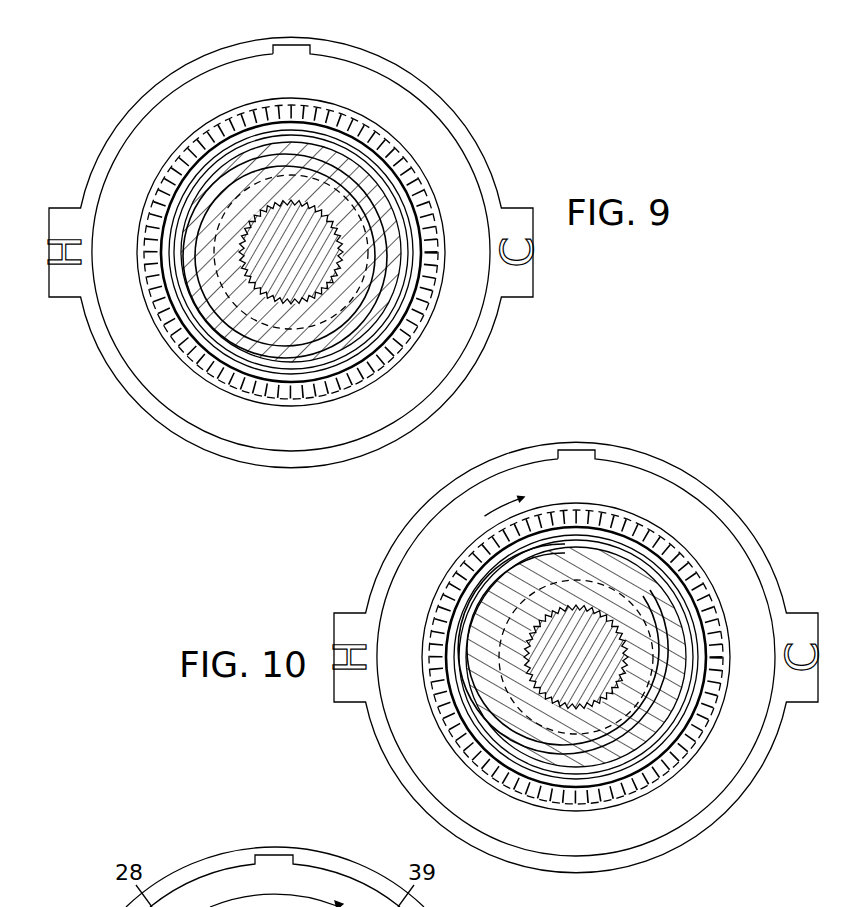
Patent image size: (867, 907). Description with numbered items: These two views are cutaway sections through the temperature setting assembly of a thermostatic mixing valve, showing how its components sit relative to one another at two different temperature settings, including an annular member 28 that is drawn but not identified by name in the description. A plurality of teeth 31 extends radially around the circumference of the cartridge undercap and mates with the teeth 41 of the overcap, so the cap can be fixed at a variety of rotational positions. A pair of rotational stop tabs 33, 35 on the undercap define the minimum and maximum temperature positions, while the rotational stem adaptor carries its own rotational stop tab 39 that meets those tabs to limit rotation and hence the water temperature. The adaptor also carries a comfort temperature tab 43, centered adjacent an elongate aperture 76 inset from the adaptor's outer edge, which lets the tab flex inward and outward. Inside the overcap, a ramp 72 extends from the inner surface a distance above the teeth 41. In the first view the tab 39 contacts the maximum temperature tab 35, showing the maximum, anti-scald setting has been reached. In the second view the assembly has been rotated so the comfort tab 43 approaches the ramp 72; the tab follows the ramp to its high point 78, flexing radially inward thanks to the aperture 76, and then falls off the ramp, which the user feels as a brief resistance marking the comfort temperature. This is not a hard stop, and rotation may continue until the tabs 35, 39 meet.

In FIG. 9, the cam ring 28 is at (285, 180).
In FIG. 10, the cam ring 28 is at (590, 595).
In FIG. 9, the teeth 31 is at (291, 305).
In FIG. 10, the teeth 31 is at (604, 647).
In FIG. 9, the rotational stop tab 33 is at (356, 252).
In FIG. 10, the rotational stop tab 33 is at (640, 657).
In FIG. 9, the maximum temperature tab 35 is at (280, 308).
In FIG. 10, the maximum temperature tab 35 is at (511, 657).
In FIG. 9, the rotational stop tab 39 is at (212, 264).
In FIG. 10, the rotational stop tab 39 is at (576, 571).
In FIG. 9, the teeth 41 is at (285, 212).
In FIG. 10, the teeth 41 is at (625, 657).
In FIG. 9, the comfort temperature tab 43 is at (346, 243).
In FIG. 10, the comfort temperature tab 43 is at (627, 670).
In FIG. 9, the ramp 72 is at (291, 313).
In FIG. 10, the ramp 72 is at (576, 715).
In FIG. 9, the elongate aperture 76 is at (302, 203).
In FIG. 10, the elongate aperture 76 is at (576, 719).
In FIG. 9, the high point 78 is at (222, 316).
In FIG. 10, the high point 78 is at (493, 707).